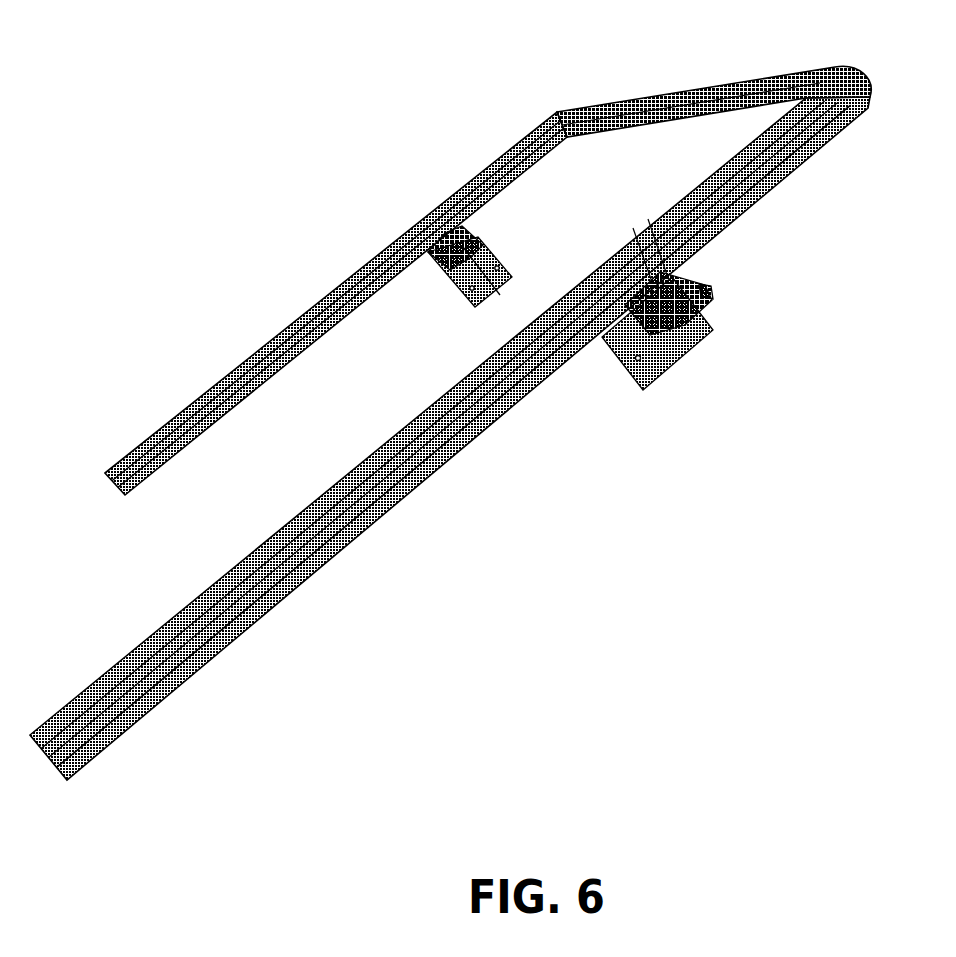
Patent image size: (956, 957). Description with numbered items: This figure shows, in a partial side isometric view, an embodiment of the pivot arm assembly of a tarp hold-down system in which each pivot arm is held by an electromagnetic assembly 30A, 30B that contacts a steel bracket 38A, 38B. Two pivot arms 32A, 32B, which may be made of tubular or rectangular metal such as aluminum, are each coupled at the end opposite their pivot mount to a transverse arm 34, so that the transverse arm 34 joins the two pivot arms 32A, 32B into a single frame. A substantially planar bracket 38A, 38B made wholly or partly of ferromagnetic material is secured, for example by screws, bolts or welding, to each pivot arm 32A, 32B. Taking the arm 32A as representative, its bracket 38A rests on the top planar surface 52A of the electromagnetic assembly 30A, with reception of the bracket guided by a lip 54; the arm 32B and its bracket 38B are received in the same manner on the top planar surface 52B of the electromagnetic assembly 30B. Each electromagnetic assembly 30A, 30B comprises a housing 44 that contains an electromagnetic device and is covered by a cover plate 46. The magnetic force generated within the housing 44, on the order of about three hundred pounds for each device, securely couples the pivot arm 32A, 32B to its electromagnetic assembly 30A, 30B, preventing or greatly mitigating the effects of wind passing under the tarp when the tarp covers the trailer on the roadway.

The electromagnetic assembly 30A is at (760, 297).
The electromagnetic assembly 30B is at (422, 298).
The pivot arm 32A is at (482, 432).
The pivot arm 32B is at (327, 295).
The transverse arm 34 is at (668, 93).
The steel bracket 38A is at (687, 277).
The steel bracket 38B is at (462, 230).
The housing 44 is at (697, 348).
The cover plate 46 is at (653, 280).
The top planar surface 52A is at (698, 303).
The top planar surface 52B is at (441, 223).
The lip 54 is at (710, 293).